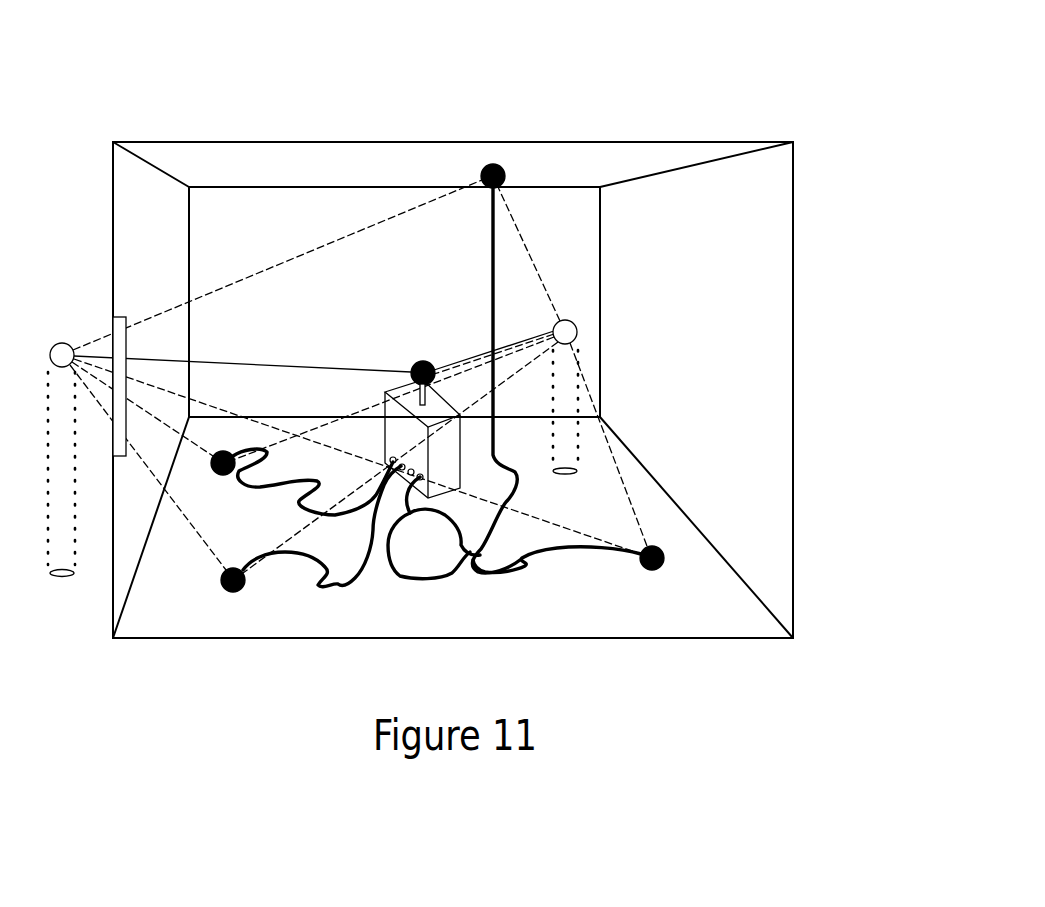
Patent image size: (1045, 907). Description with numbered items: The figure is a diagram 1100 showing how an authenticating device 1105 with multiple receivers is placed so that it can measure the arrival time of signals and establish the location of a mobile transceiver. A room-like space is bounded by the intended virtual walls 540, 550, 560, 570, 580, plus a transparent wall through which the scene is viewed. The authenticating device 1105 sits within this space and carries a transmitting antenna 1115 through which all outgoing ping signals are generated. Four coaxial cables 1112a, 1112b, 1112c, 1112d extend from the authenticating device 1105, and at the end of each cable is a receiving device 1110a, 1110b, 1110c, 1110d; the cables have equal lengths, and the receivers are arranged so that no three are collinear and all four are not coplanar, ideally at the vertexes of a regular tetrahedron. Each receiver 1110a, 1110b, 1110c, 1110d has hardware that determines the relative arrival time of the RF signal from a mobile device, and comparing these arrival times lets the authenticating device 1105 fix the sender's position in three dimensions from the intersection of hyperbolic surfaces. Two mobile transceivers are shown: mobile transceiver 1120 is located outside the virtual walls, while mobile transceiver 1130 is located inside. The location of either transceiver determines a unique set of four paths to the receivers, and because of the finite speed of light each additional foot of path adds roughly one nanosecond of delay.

The diagram 1100 is at (722, 37).
The virtual wall 540 is at (163, 249).
The virtual wall 550 is at (433, 279).
The virtual wall 560 is at (717, 346).
The virtual wall 570 is at (482, 619).
The virtual wall 580 is at (388, 171).
The authenticating device 1105 is at (388, 430).
The receiver 1110a is at (505, 170).
The receiver 1110b is at (660, 570).
The receiver 1110c is at (242, 590).
The receiver 1110d is at (214, 474).
The coaxial cable 1112a is at (497, 428).
The coaxial cable 1112b is at (515, 580).
The coaxial cable 1112c is at (343, 588).
The coaxial cable 1112d is at (288, 487).
The antenna 1115 is at (418, 362).
The mobile transceiver 1120 is at (56, 343).
The mobile transceiver 1130 is at (576, 322).